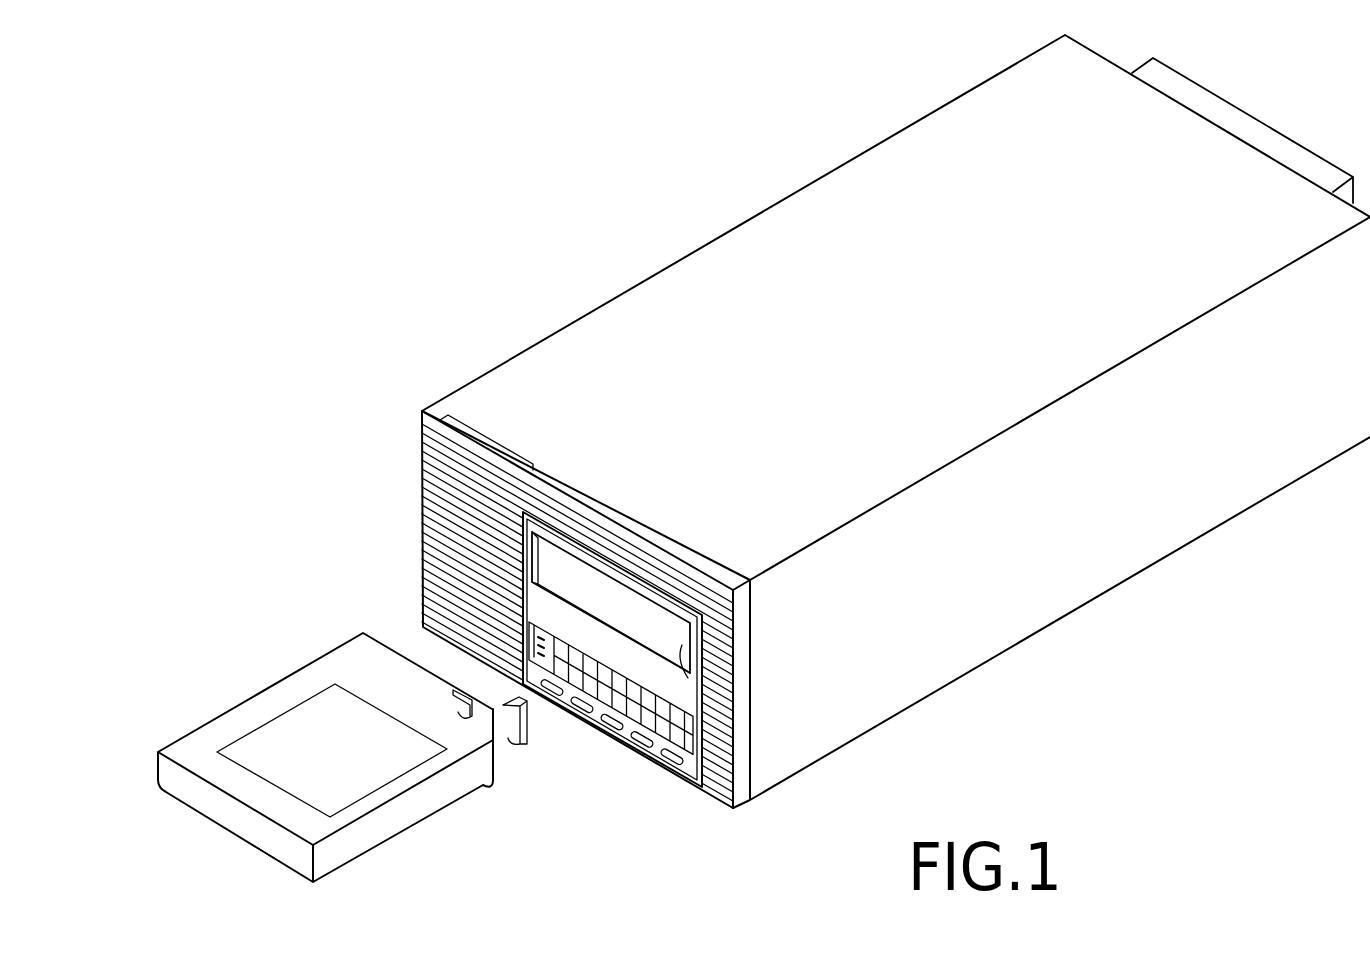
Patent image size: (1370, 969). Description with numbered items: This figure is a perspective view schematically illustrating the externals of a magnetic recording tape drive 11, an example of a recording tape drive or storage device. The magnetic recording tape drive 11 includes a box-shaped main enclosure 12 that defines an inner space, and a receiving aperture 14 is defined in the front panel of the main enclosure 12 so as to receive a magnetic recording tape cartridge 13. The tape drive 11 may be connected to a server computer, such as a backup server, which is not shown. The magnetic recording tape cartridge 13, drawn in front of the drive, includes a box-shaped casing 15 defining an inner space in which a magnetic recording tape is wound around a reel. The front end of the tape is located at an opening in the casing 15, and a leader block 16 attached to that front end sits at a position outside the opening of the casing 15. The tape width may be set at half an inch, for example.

The magnetic recording tape drive 11 is at (611, 210).
The main enclosure 12 is at (556, 333).
The magnetic recording tape cartridge 13 is at (214, 668).
The receiving aperture 14 is at (716, 694).
The casing 15 is at (305, 668).
The leader block 16 is at (514, 737).